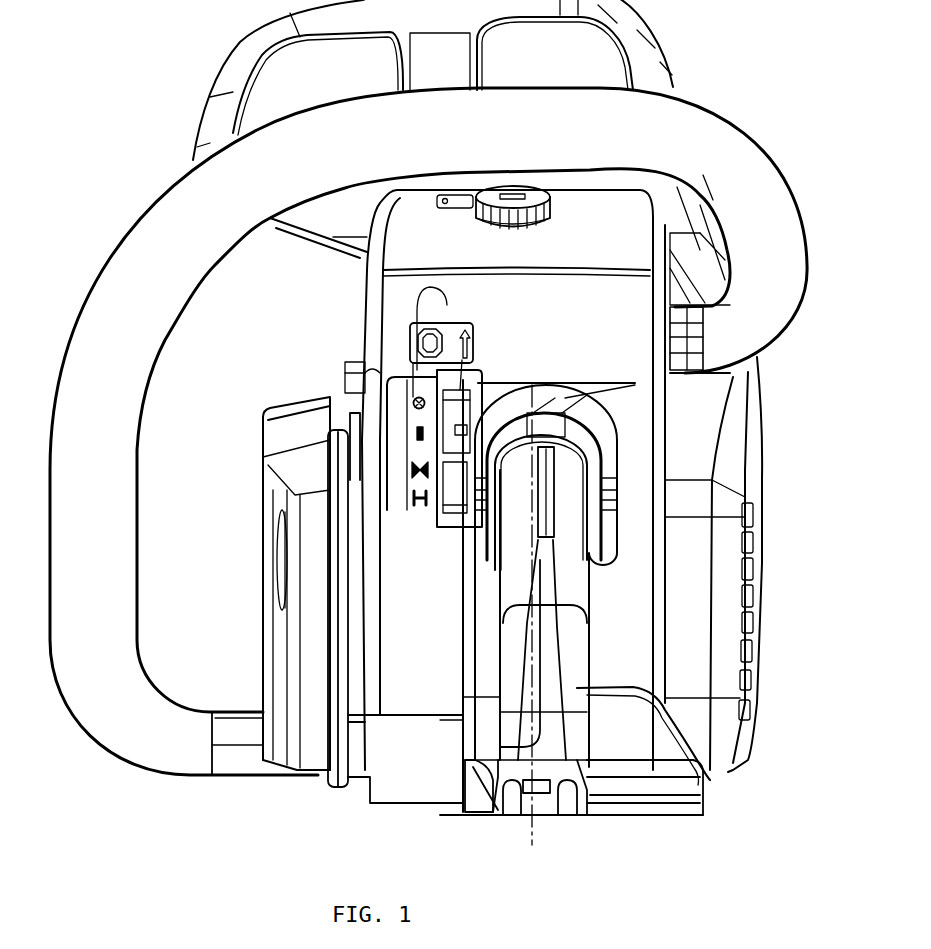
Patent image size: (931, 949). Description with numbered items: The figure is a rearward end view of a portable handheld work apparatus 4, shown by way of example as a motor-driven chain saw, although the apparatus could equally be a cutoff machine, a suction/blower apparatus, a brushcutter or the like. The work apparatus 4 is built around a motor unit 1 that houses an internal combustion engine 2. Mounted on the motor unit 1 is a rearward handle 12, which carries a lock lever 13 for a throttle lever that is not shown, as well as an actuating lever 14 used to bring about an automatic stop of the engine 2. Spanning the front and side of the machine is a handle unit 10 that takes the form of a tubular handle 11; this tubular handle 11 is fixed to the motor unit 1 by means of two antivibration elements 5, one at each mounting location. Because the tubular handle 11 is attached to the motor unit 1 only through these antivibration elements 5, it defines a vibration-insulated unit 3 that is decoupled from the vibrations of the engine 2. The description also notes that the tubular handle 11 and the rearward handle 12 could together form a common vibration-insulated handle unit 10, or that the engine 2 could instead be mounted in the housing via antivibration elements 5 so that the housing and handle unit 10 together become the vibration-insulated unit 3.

The motor unit 1 is at (428, 637).
The internal combustion engine 2 is at (430, 605).
The vibration-insulated unit 3 is at (118, 222).
The portable handheld work apparatus 4 is at (318, 320).
The antivibration element 5 is at (700, 373).
The handle unit 10 is at (93, 740).
The tubular handle 11 is at (193, 757).
The rearward handle 12 is at (710, 780).
The lock lever 13 is at (530, 520).
The actuating lever 14 is at (437, 503).